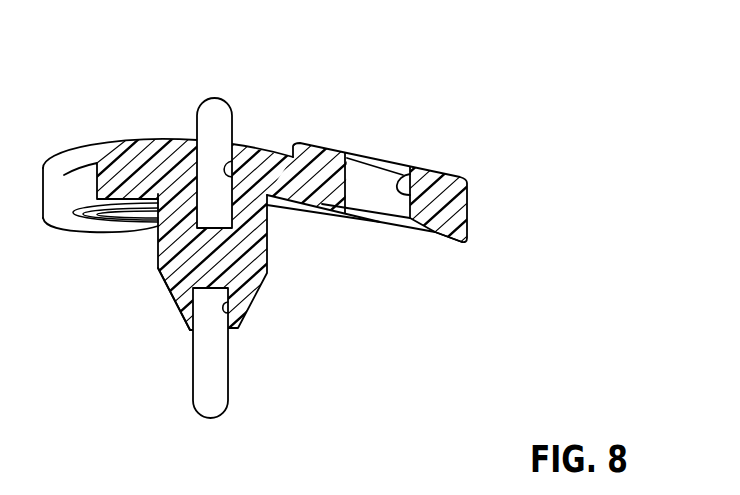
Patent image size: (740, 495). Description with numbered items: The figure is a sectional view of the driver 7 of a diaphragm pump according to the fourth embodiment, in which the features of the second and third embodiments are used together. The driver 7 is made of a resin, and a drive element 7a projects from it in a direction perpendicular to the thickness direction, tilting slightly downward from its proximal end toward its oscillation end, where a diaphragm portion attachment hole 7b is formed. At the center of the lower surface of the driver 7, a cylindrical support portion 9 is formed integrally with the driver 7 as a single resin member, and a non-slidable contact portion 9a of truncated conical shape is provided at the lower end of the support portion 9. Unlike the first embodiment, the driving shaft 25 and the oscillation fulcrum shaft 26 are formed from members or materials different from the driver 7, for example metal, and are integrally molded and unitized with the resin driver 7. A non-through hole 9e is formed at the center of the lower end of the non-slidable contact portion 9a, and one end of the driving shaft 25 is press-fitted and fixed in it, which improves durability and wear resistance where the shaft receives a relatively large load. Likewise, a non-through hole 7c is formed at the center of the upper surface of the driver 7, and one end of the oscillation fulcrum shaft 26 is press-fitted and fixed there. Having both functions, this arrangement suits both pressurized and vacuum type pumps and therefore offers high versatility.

The driver 7 is at (318, 143).
The drive element 7a is at (437, 243).
The diaphragm portion attachment hole 7b is at (399, 180).
The non-through hole 7c is at (238, 148).
The support portion 9 is at (159, 247).
The non-slidable contact portion 9a is at (176, 296).
The non-through hole 9e is at (228, 308).
The driving shaft 25 is at (229, 378).
The oscillation fulcrum shaft 26 is at (199, 112).